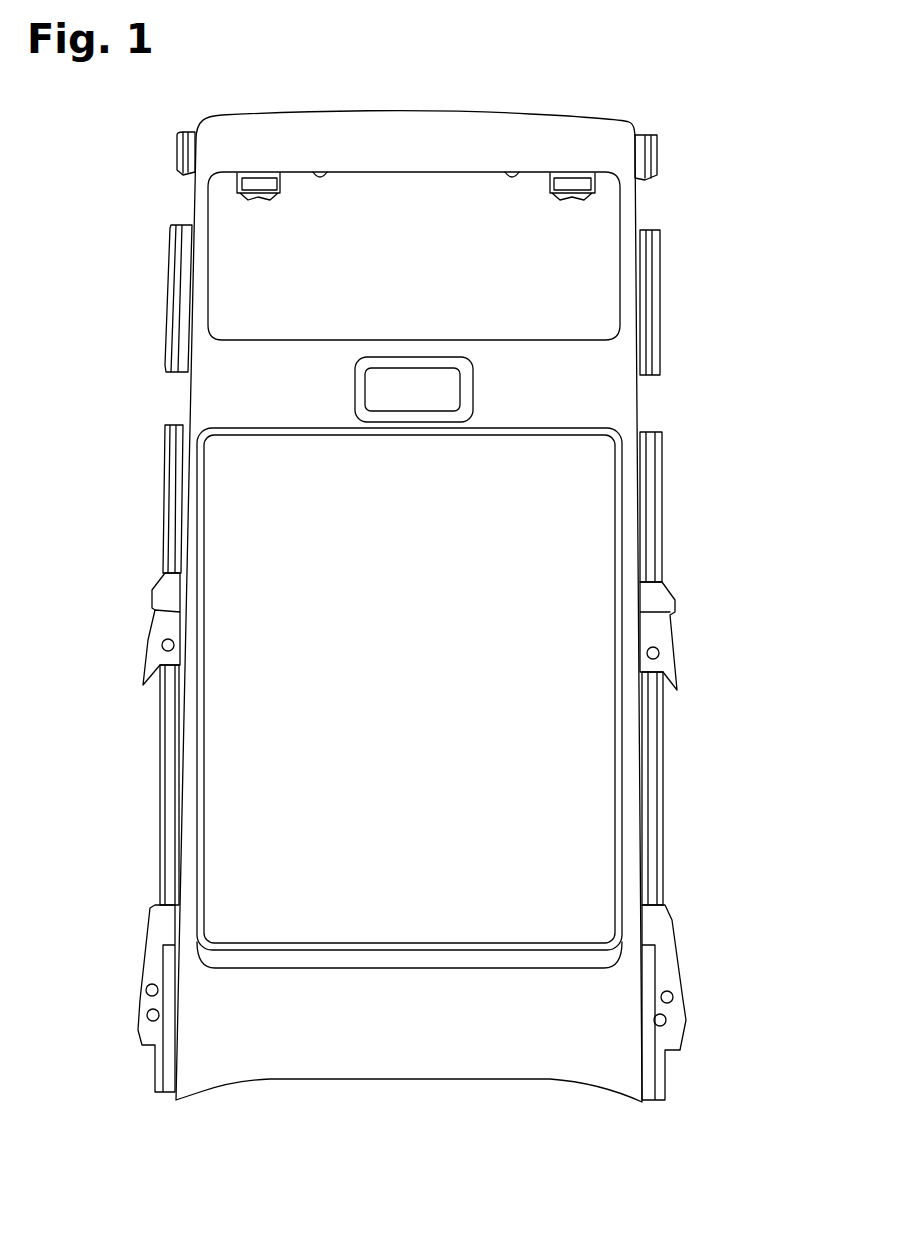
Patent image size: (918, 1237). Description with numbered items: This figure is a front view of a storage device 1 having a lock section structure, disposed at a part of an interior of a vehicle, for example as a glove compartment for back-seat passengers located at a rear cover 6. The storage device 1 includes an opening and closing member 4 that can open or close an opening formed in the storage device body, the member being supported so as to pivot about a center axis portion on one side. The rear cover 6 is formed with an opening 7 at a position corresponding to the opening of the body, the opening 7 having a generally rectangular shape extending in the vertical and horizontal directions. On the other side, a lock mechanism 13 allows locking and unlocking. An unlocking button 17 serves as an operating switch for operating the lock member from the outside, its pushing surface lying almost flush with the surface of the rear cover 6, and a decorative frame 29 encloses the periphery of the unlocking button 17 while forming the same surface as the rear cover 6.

The storage device 1 is at (705, 493).
The opening and closing member 4 is at (530, 725).
The rear cover 6 is at (232, 401).
The opening 7 is at (625, 778).
The lock mechanism 13 is at (742, 347).
The unlocking button 17 is at (442, 392).
The decorative frame 29 is at (408, 366).